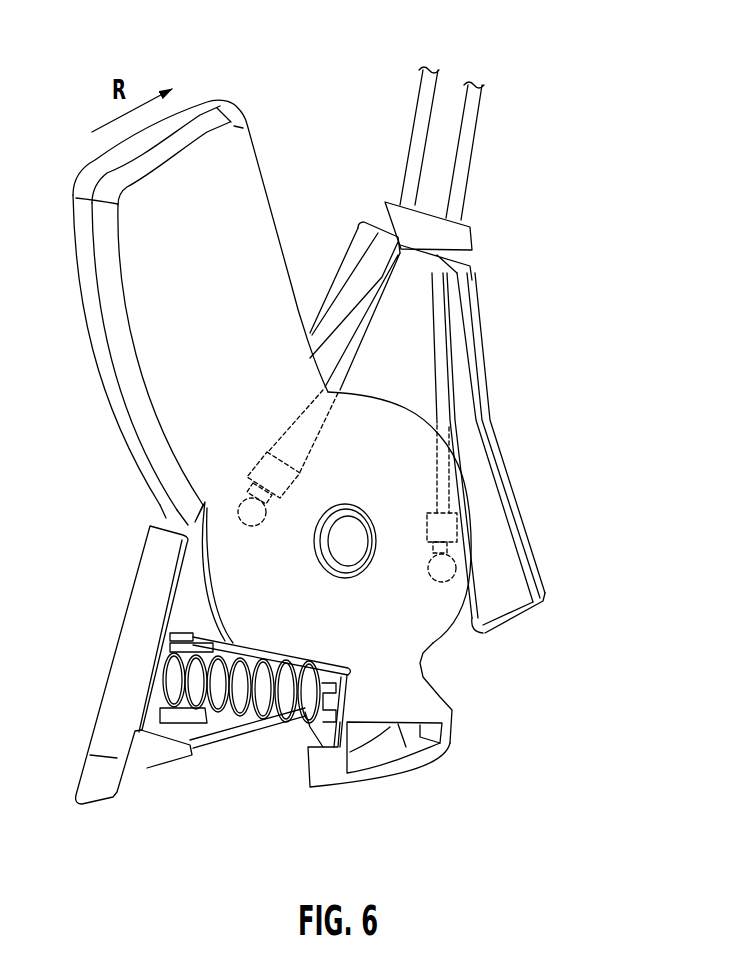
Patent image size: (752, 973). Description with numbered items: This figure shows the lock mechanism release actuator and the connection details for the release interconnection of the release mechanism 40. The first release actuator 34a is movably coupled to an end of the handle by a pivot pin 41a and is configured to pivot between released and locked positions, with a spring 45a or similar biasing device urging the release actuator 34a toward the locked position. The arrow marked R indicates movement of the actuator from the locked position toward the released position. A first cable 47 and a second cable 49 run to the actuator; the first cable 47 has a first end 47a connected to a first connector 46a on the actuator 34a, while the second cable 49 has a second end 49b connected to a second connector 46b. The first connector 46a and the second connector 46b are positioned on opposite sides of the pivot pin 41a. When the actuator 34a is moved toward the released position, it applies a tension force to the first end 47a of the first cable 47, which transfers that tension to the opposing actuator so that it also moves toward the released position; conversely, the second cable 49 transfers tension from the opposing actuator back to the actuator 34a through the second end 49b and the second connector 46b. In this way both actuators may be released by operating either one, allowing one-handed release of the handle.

The release actuator 34a is at (148, 53).
The release mechanism 40 is at (576, 258).
The second cable 49 is at (417, 123).
The first cable 47 is at (478, 127).
The second end of second cable 49b is at (272, 415).
The second connector 46b is at (232, 499).
The first end of first cable 47a is at (456, 490).
The first connector 46a is at (461, 572).
The pivot pin 41a is at (366, 566).
The spring 45a is at (257, 735).